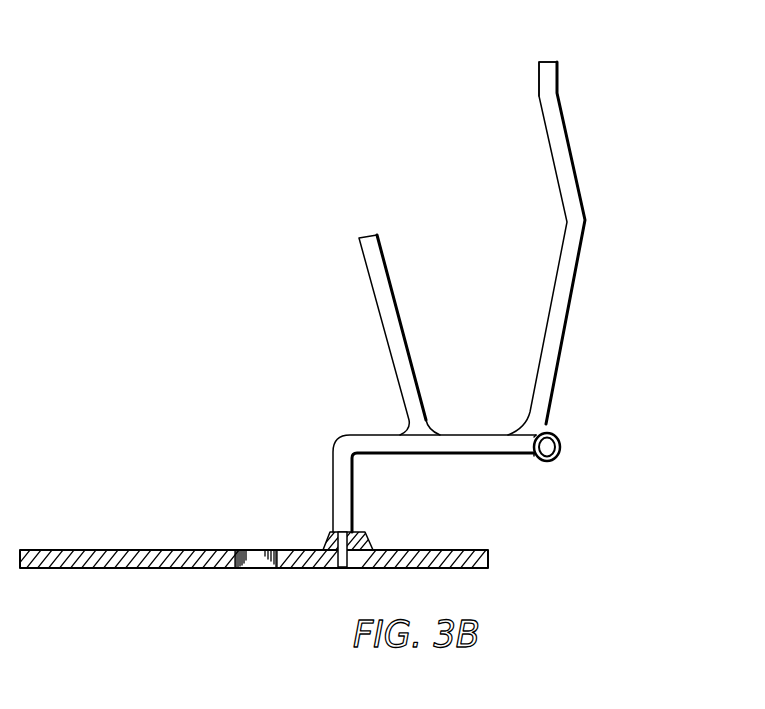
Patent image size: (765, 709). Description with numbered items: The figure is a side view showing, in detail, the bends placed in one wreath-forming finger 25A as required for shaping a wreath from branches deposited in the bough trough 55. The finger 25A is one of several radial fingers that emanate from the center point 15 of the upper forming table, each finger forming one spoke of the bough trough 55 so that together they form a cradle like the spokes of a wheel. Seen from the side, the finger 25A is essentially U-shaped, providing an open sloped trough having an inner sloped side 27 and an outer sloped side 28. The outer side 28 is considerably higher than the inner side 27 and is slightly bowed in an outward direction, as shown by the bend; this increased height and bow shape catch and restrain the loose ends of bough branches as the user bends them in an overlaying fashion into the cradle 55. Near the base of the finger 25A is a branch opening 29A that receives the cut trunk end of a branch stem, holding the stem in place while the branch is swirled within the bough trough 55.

The center point 15 is at (248, 550).
The bough trough 55 is at (436, 224).
The inner sloped side 27 is at (398, 318).
The outer sloped side 28 is at (560, 288).
The branch opening 29A is at (556, 436).
The finger 25A is at (548, 62).